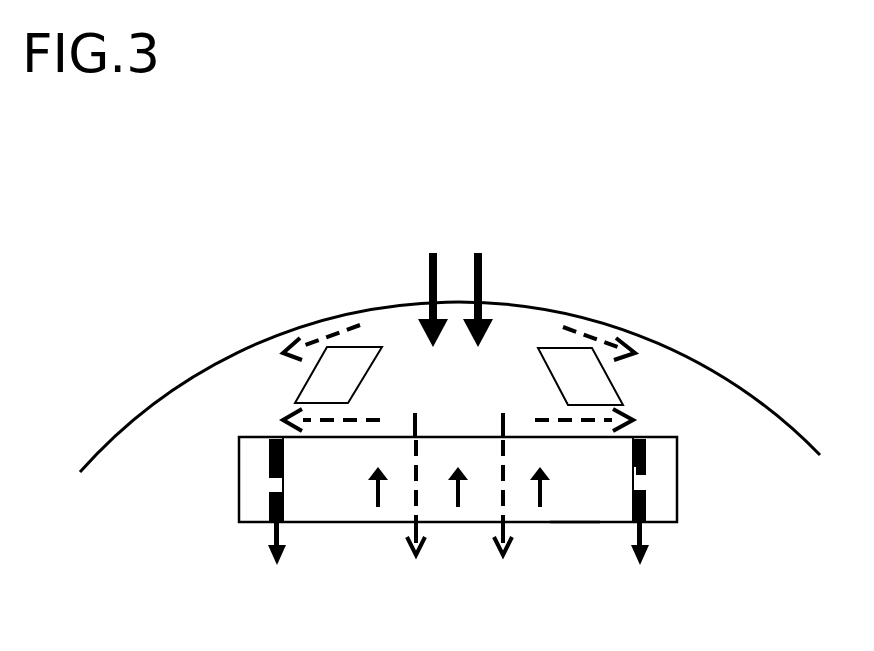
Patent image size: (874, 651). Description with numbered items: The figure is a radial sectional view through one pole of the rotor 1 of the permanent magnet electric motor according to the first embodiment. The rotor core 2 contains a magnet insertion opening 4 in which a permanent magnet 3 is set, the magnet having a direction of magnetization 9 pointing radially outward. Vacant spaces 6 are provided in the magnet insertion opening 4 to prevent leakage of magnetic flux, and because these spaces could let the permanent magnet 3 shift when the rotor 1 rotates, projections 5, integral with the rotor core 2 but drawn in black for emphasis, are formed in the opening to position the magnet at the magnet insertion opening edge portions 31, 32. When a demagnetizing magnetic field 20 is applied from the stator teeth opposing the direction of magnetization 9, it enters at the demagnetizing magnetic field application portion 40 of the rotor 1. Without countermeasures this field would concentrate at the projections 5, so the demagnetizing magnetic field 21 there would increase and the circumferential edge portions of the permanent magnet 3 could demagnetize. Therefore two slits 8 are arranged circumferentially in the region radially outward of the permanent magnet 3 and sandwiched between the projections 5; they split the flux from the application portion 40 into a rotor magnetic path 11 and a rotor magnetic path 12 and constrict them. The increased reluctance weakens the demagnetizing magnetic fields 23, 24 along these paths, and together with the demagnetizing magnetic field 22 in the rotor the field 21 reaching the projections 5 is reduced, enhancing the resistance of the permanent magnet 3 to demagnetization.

The rotor 1 is at (705, 362).
The rotor core 2 is at (765, 440).
The permanent magnet 3 is at (317, 490).
The magnet insertion opening 4 is at (565, 522).
The projection 5 is at (647, 453).
The vacant space 6 is at (667, 497).
The slit 8 is at (618, 337).
The direction of magnetization 9 is at (540, 497).
The rotor magnetic path 11 is at (328, 415).
The rotor magnetic path 12 is at (327, 347).
The demagnetizing magnetic field 20 is at (478, 250).
The demagnetizing magnetic field 21 is at (273, 472).
The demagnetizing magnetic field 22 is at (500, 490).
The demagnetizing magnetic field 23 is at (330, 330).
The demagnetizing magnetic field 24 is at (284, 420).
The magnet insertion opening edge portion 31 is at (266, 456).
The magnet insertion opening edge portion 32 is at (258, 522).
The demagnetizing magnetic field application portion 40 is at (456, 335).